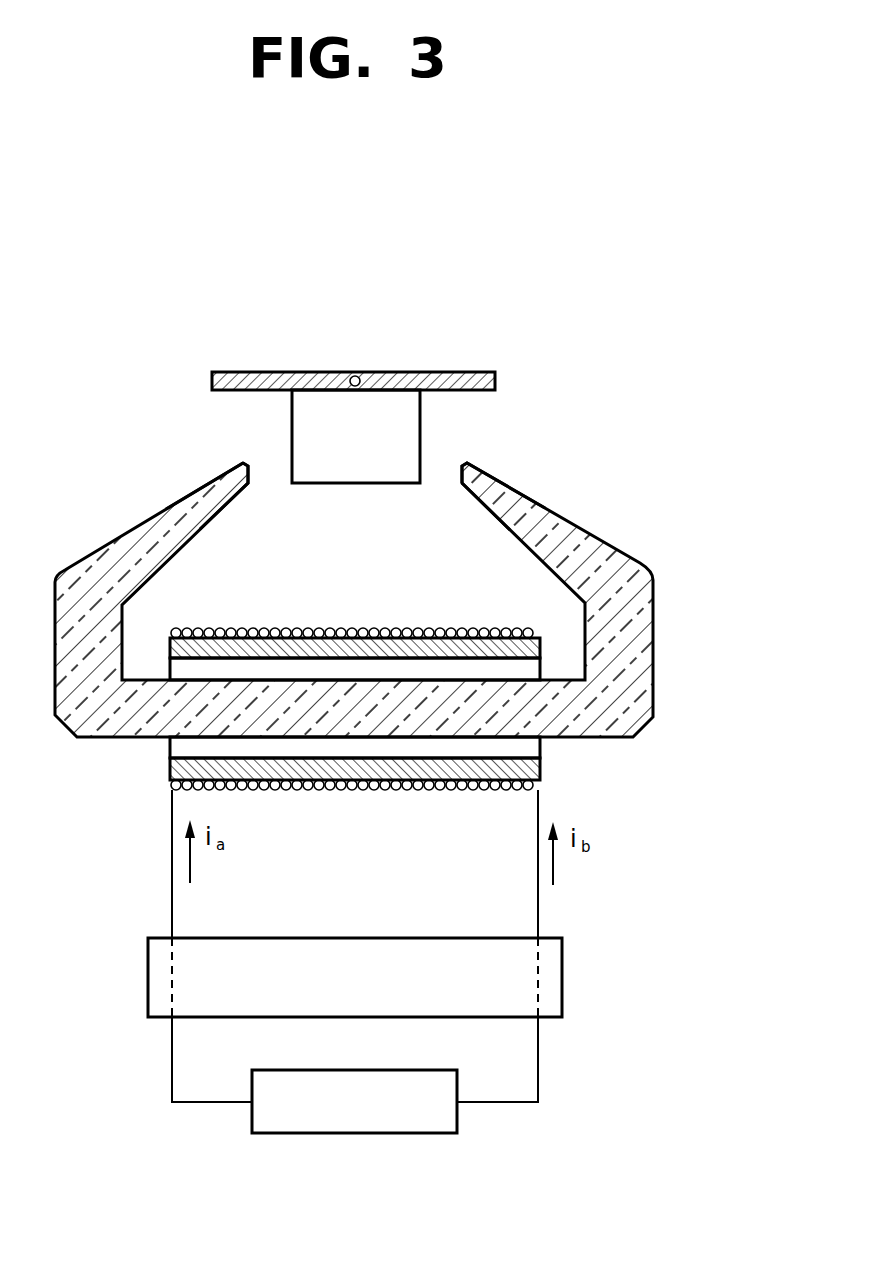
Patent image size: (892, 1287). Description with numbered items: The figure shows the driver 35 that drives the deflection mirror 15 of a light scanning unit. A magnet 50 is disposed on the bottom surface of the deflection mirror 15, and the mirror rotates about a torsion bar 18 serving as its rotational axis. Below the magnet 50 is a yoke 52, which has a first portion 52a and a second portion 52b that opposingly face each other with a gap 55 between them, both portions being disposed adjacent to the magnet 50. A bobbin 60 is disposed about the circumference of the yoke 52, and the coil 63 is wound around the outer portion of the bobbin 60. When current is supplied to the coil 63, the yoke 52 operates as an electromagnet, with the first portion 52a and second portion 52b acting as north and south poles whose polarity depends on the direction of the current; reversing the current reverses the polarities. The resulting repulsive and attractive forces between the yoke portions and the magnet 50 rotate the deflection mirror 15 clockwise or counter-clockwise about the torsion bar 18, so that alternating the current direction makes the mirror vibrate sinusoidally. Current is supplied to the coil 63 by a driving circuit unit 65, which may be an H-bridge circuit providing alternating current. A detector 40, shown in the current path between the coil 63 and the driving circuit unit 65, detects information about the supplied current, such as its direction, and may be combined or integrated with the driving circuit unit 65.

The deflection mirror 15 is at (482, 378).
The torsion bar 18 is at (355, 374).
The driver 35 is at (425, 588).
The detector 40 is at (148, 968).
The magnet 50 is at (420, 413).
The yoke 52 is at (407, 580).
The first portion 52a is at (497, 464).
The second portion 52b is at (230, 470).
The gap 55 is at (268, 478).
The bobbin 60 is at (411, 753).
The coil 63 is at (448, 790).
The driving circuit unit 65 is at (280, 1134).